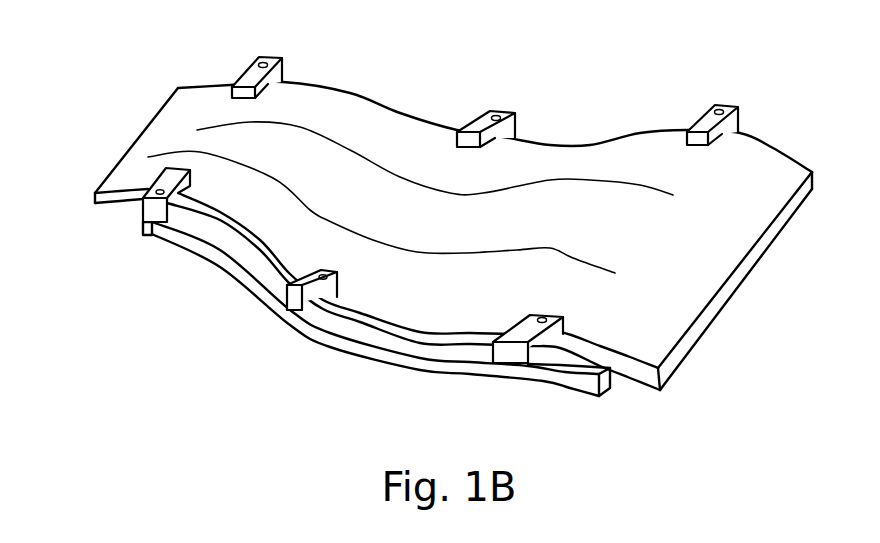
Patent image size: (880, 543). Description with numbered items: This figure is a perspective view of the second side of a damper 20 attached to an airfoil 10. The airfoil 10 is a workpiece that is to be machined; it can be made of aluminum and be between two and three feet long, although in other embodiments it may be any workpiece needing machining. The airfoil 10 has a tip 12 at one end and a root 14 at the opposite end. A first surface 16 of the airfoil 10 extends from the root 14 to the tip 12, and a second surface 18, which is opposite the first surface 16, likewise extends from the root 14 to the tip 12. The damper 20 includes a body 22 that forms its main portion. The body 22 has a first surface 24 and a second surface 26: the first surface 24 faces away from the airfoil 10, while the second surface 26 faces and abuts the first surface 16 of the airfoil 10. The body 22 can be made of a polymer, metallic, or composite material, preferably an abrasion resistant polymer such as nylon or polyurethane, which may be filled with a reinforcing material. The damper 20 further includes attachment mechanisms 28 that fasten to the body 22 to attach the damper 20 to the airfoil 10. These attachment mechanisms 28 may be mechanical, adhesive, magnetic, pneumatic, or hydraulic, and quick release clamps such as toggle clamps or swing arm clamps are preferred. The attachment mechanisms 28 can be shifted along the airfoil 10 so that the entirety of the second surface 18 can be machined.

The airfoil 10 is at (431, 223).
The tip 12 is at (128, 147).
The root 14 is at (747, 272).
The first surface 16 is at (114, 203).
The second surface 18 is at (192, 108).
The damper 20 is at (364, 333).
The body 22 is at (235, 254).
The first surface 24 is at (543, 382).
The second surface 26 is at (438, 375).
The attachment mechanisms 28 is at (280, 73).